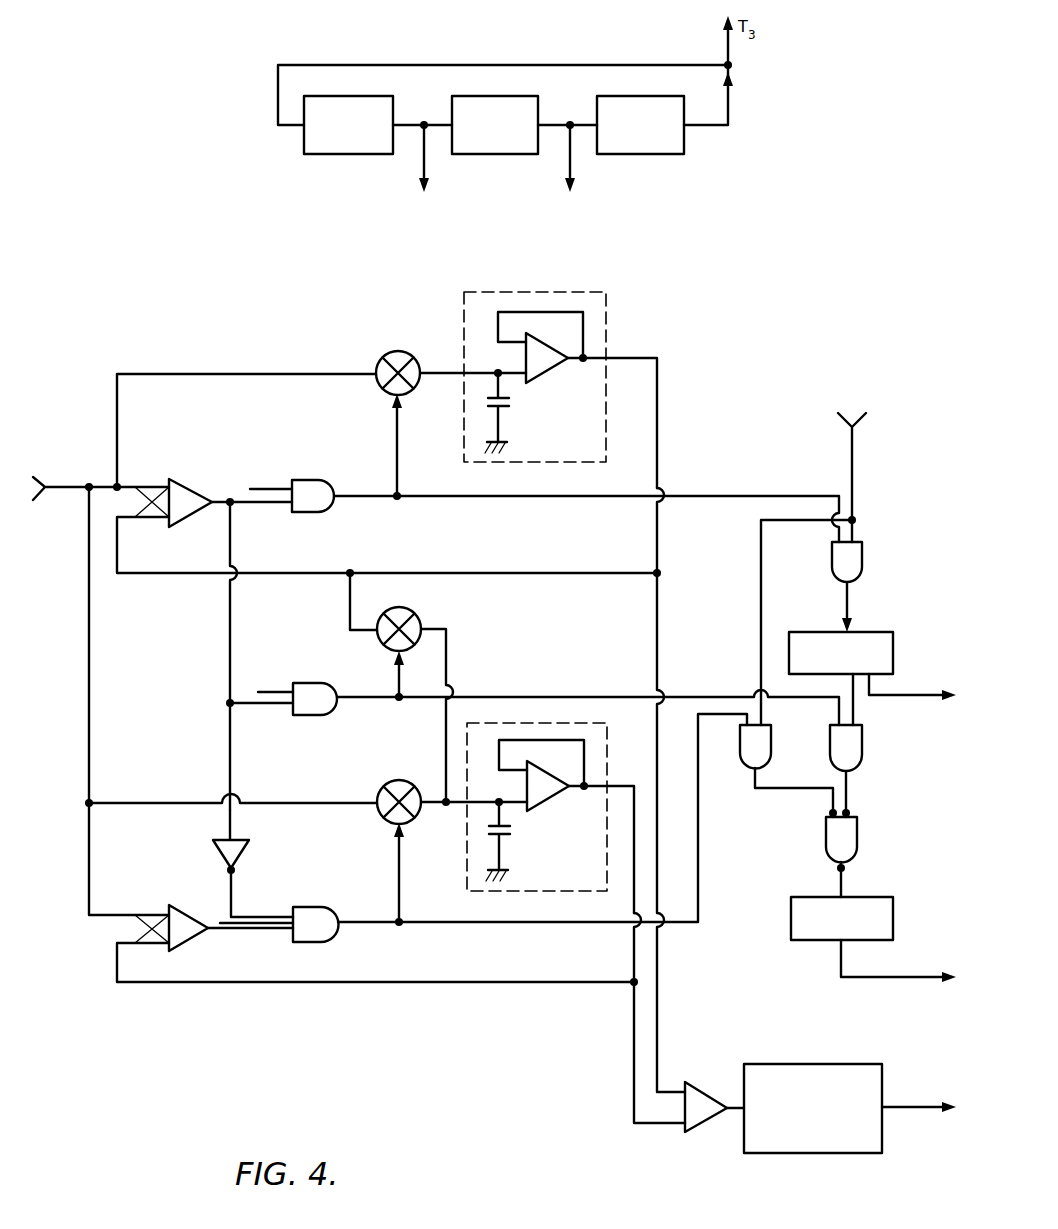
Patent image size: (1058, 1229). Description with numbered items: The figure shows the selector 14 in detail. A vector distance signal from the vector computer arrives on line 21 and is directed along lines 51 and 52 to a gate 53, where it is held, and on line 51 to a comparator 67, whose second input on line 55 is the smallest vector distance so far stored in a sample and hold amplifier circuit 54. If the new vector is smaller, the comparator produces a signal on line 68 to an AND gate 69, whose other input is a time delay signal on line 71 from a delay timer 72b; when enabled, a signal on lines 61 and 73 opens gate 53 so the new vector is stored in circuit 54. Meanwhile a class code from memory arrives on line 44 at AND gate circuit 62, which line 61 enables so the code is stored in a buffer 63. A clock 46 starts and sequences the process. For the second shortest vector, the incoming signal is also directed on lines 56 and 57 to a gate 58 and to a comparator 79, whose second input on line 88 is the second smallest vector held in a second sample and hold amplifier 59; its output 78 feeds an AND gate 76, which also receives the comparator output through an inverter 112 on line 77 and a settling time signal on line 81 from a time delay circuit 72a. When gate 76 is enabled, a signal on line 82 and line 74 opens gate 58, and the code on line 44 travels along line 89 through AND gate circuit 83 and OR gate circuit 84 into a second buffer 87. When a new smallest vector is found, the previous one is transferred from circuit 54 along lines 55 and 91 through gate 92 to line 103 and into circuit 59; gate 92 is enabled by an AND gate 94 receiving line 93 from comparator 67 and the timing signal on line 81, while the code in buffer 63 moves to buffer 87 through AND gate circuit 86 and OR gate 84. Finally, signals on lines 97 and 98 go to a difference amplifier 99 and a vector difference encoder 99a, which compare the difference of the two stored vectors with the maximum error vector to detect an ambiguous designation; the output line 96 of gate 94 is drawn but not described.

The selector 14 is at (780, 294).
The line 21 is at (62, 491).
The line 44 is at (853, 471).
The clock 46 is at (684, 140).
The line 51 is at (101, 486).
The line 52 is at (254, 373).
The gate 53 is at (393, 351).
The sample and hold amplifier circuit 54 is at (612, 304).
The line 55 is at (538, 572).
The line 56 is at (90, 688).
The line 57 is at (160, 801).
The gate 58 is at (400, 778).
The second sample and hold amplifier 59 is at (612, 754).
The line 61 is at (384, 500).
The AND gate circuit 62 is at (865, 561).
The buffer 63 is at (880, 631).
The comparator 67 is at (186, 482).
The line 68 is at (216, 505).
The AND gate 69 is at (326, 513).
The line 71 is at (572, 162).
The time delay circuit 72a is at (304, 146).
The delay timer 72b is at (490, 155).
The line 73 is at (396, 441).
The line 74 is at (397, 870).
The AND gate 76 is at (325, 943).
The line 77 is at (229, 631).
The output 78 is at (238, 931).
The comparator 79 is at (194, 905).
The line 81 is at (424, 160).
The line 82 is at (492, 923).
The AND gate circuit 83 is at (746, 776).
The OR gate circuit 84 is at (859, 845).
The AND gate circuit 86 is at (865, 751).
The second buffer 87 is at (895, 916).
The line 88 is at (431, 984).
The line 89 is at (760, 562).
The line 91 is at (349, 603).
The gate 92 is at (415, 612).
The line 93 is at (266, 705).
The AND gate 94 is at (319, 683).
The gate output line 96 is at (360, 700).
The line 97 is at (660, 626).
The line 98 is at (633, 1046).
The difference amplifier 99 is at (701, 1082).
The vector difference encoder 99a is at (826, 1064).
The line 103 is at (448, 658).
The inverter 112 is at (241, 851).